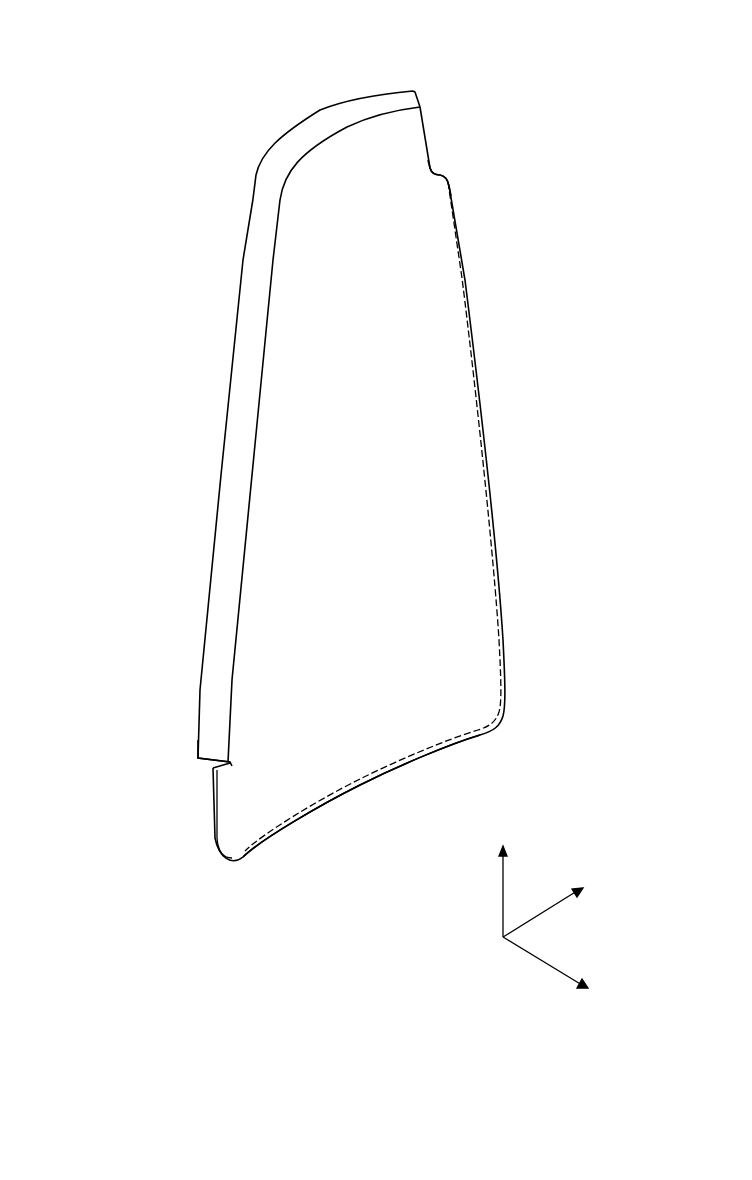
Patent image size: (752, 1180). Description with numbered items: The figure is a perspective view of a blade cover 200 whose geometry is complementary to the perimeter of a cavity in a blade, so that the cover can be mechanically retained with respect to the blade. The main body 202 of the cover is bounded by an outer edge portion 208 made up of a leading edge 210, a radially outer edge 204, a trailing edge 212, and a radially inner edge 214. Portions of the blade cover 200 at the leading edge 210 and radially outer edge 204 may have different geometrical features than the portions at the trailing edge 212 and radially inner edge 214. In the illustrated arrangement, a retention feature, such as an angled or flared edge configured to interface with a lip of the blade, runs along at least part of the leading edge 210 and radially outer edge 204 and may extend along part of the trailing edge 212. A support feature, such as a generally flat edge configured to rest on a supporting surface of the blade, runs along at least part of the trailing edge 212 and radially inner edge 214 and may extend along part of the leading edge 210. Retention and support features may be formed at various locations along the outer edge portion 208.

The blade cover 200 is at (96, 65).
The main panel body 202 is at (383, 494).
The radially outer edge 204 is at (342, 122).
The outer edge portion 208 is at (263, 187).
The leading edge 210 is at (184, 741).
The trailing edge 212 is at (452, 178).
The radially inner edge 214 is at (343, 797).